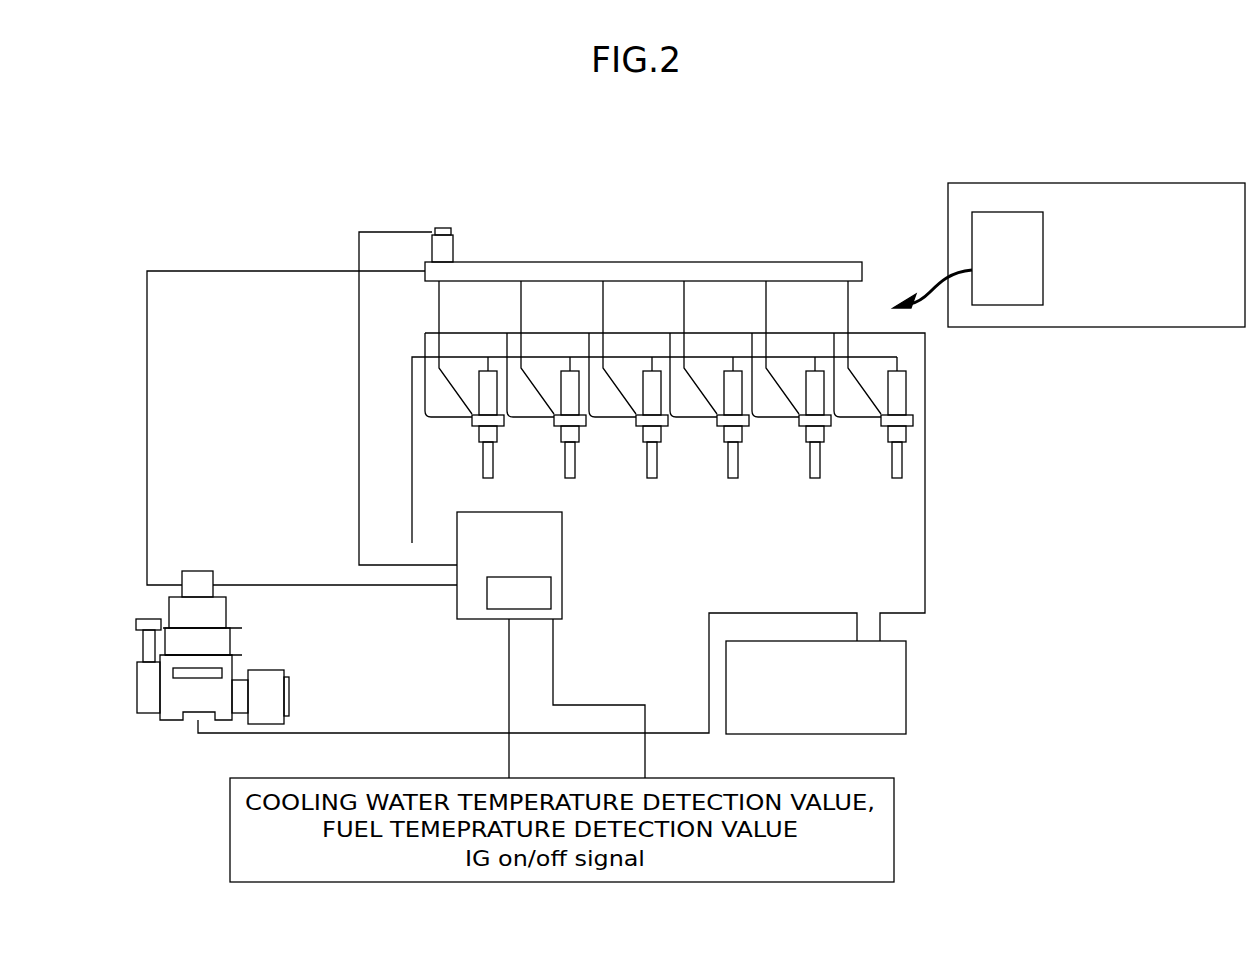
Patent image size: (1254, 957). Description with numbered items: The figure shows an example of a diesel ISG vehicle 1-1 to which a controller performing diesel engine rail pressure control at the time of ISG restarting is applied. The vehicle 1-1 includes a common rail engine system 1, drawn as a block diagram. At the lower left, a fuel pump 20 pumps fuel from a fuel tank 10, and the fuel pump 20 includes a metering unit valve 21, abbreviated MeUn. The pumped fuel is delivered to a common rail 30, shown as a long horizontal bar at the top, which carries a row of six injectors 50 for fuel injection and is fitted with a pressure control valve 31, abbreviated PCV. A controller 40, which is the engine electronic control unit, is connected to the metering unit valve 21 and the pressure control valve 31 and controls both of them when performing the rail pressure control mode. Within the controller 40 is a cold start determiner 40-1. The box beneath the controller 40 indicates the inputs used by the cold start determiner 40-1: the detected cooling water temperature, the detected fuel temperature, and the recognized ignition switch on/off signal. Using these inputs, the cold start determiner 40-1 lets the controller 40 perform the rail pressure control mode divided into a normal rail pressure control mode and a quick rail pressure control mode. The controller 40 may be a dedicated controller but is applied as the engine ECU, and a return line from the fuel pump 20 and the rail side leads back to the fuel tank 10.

The common rail engine system 1 is at (968, 260).
The diesel ISG vehicle 1-1 is at (1168, 330).
The fuel tank 10 is at (893, 688).
The fuel pump 20 is at (177, 710).
The metering unit valve 21 is at (196, 577).
The common rail 30 is at (652, 272).
The pressure control valve 31 is at (440, 243).
The controller 40 is at (542, 548).
The cold start determiner 40-1 is at (536, 590).
The injector 50 is at (898, 432).